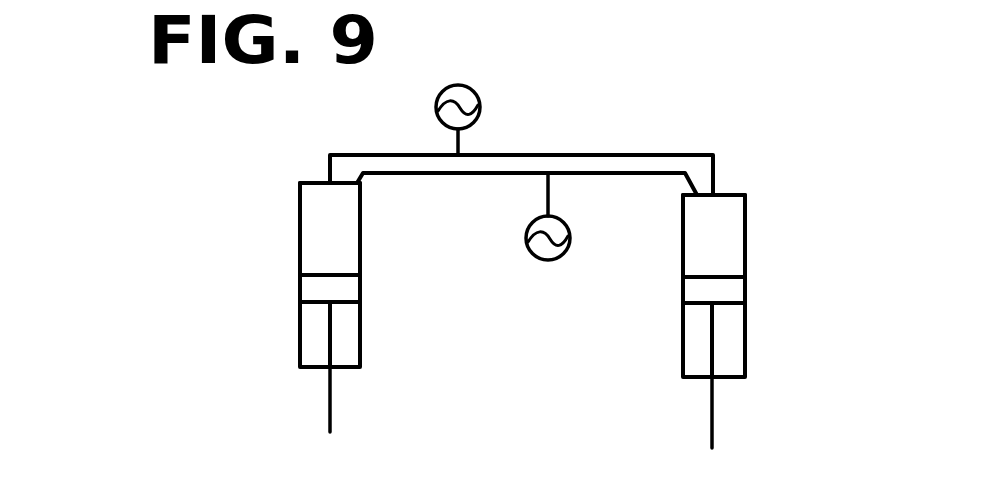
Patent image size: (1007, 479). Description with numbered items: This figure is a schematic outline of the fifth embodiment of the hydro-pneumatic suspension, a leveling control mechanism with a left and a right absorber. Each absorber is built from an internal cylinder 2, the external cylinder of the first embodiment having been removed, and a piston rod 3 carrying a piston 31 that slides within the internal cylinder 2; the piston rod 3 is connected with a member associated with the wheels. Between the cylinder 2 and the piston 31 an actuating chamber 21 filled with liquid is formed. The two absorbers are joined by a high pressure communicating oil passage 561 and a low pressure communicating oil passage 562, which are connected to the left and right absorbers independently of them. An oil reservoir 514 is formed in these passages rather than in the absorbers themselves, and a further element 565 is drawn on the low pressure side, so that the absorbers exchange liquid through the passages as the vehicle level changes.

The internal cylinder 2 is at (362, 225).
The actuating chamber 21 is at (320, 228).
The piston 31 is at (308, 292).
The piston rod 3 is at (712, 408).
The oil reservoir 514 is at (477, 96).
The high pressure communicating oil passage 561 is at (472, 173).
The low pressure communicating oil passage 562 is at (565, 155).
The AC source 565 is at (548, 260).